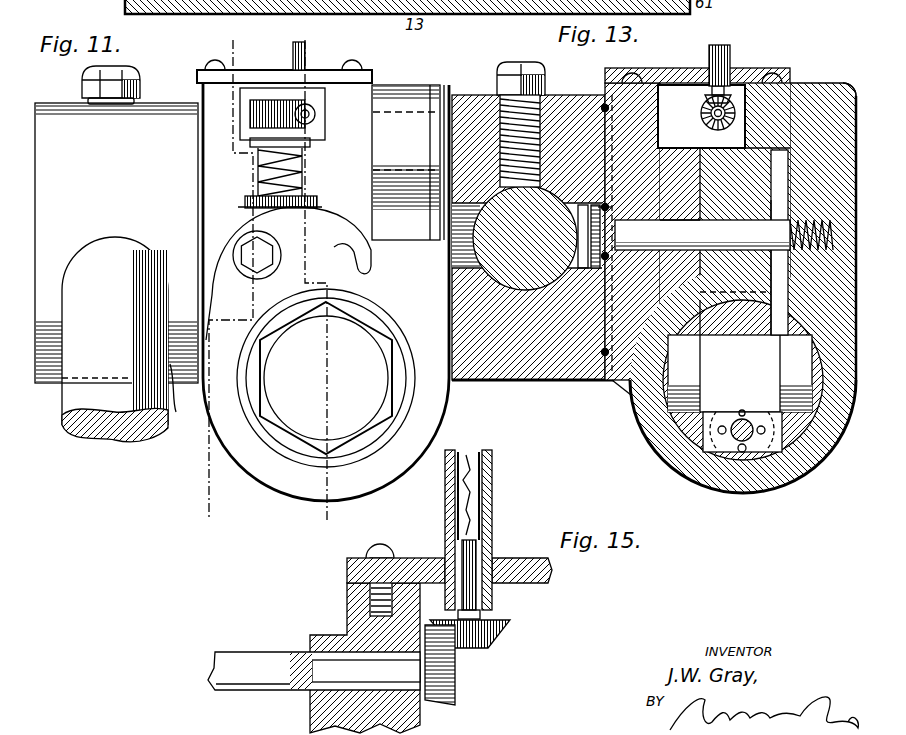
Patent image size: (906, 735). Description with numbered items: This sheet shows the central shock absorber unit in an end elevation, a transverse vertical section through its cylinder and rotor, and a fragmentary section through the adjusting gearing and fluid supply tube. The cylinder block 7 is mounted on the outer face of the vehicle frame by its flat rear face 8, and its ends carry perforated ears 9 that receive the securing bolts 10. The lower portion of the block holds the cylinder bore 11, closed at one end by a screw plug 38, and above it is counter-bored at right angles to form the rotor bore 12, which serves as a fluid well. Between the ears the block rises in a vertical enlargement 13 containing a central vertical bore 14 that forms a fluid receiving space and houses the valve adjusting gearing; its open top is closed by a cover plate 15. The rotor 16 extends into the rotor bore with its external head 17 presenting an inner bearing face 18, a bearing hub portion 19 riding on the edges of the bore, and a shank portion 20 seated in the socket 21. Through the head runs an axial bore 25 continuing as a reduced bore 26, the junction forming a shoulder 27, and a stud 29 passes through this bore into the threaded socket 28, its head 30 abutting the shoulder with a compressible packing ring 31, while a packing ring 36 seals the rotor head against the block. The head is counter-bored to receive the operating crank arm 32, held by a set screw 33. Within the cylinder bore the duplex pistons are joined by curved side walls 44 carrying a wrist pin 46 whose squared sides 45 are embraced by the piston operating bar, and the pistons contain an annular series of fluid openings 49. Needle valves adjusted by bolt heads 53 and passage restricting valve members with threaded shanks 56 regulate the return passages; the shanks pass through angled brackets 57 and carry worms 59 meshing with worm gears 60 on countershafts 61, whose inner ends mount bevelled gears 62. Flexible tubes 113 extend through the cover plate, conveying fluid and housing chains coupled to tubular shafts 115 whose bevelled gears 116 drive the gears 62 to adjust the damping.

In FIG. 11, the cylinder block 7 is at (431, 76).
In FIG. 13, the cylinder block 7 is at (803, 77).
In FIG. 11, the flat rear face 8 is at (446, 85).
In FIG. 13, the flat rear face 8 is at (850, 86).
In FIG. 11, the ears 9 is at (390, 90).
In FIG. 11, the securing bolts 10 is at (217, 524).
In FIG. 11, the cylinder bore 11 is at (269, 459).
In FIG. 13, the cylinder bore 11 is at (792, 454).
In FIG. 11, the rotor bore 12 is at (334, 524).
In FIG. 13, the rotor bore 12 is at (787, 192).
In FIG. 11, the vertical enlargement 13 is at (212, 108).
In FIG. 15, the vertical enlargement 13 is at (372, 630).
In FIG. 13, the central vertical bore 14 is at (672, 96).
In FIG. 11, the cover plate 15 is at (330, 73).
In FIG. 13, the cover plate 15 is at (712, 70).
In FIG. 15, the cover plate 15 is at (410, 568).
In FIG. 11, the rotor 16 is at (116, 243).
In FIG. 11, the external head 17 is at (181, 398).
In FIG. 13, the external head 17 is at (512, 370).
In FIG. 13, the inner bearing face 18 is at (607, 87).
In FIG. 13, the bearing hub portion 19 is at (630, 135).
In FIG. 13, the shank portion 20 is at (668, 160).
In FIG. 13, the socket 21 is at (790, 162).
In FIG. 13, the axial bore 25 is at (468, 206).
In FIG. 13, the bore of reduced diameter 26 is at (671, 212).
In FIG. 13, the shoulder 27 is at (614, 209).
In FIG. 13, the threaded socket 28 is at (812, 216).
In FIG. 13, the stud 29 is at (702, 235).
In FIG. 13, the head of the stud 30 is at (594, 270).
In FIG. 13, the compressible packing ring 31 is at (607, 258).
In FIG. 11, the operating crank arm 32 is at (140, 250).
In FIG. 13, the operating crank arm 32 is at (516, 286).
In FIG. 11, the set screw 33 is at (104, 78).
In FIG. 13, the set screw 33 is at (510, 66).
In FIG. 13, the packing ring 36 is at (594, 376).
In FIG. 11, the screw plug 38 is at (326, 378).
In FIG. 13, the side walls 44 is at (792, 328).
In FIG. 13, the squared sides 45 is at (720, 455).
In FIG. 13, the wrist pin 46 is at (692, 418).
In FIG. 13, the fluid openings 49 is at (762, 436).
In FIG. 11, the bolt heads 53 is at (270, 262).
In FIG. 11, the threaded shanks 56 is at (310, 184).
In FIG. 11, the angled brackets 57 is at (304, 160).
In FIG. 11, the worms 59 is at (258, 110).
In FIG. 11, the worm gears 60 is at (311, 108).
In FIG. 11, the countershafts 61 is at (316, 116).
In FIG. 15, the countershafts 61 is at (240, 660).
In FIG. 15, the bevelled gears 62 is at (450, 662).
In FIG. 11, the flexible tubes 113 is at (299, 56).
In FIG. 13, the flexible tubes 113 is at (725, 48).
In FIG. 15, the flexible tubes 113 is at (494, 498).
In FIG. 15, the tubular shafts 115 is at (478, 600).
In FIG. 15, the bevelled gears 116 is at (500, 623).